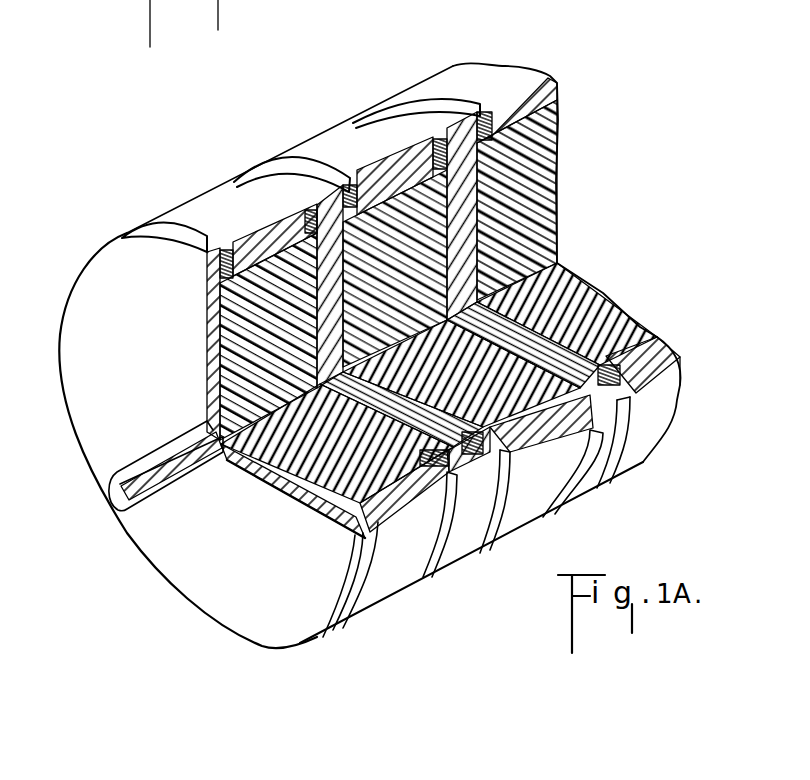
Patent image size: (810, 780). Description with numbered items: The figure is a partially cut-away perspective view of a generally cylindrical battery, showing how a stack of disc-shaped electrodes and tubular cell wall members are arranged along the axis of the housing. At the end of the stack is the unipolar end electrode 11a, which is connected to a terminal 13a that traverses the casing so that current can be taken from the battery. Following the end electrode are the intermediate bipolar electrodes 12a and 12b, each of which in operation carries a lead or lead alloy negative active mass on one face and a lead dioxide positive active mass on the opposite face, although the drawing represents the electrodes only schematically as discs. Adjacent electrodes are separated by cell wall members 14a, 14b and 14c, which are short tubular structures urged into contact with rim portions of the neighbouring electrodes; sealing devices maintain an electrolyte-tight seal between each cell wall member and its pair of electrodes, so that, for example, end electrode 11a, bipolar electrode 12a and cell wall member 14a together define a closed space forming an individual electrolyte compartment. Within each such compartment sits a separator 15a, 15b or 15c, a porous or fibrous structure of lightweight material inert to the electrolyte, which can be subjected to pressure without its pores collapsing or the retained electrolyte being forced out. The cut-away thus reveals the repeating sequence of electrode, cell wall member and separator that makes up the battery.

The end electrode 11a is at (195, 237).
The bipolar electrode 12a is at (315, 182).
The bipolar electrode 12b is at (458, 110).
The terminal 13a is at (108, 496).
The cell wall member 14a is at (267, 202).
The cell wall member 14b is at (386, 142).
The cell wall member 14c is at (520, 80).
The separator 15a is at (383, 468).
The separator 15b is at (483, 397).
The separator 15c is at (645, 325).